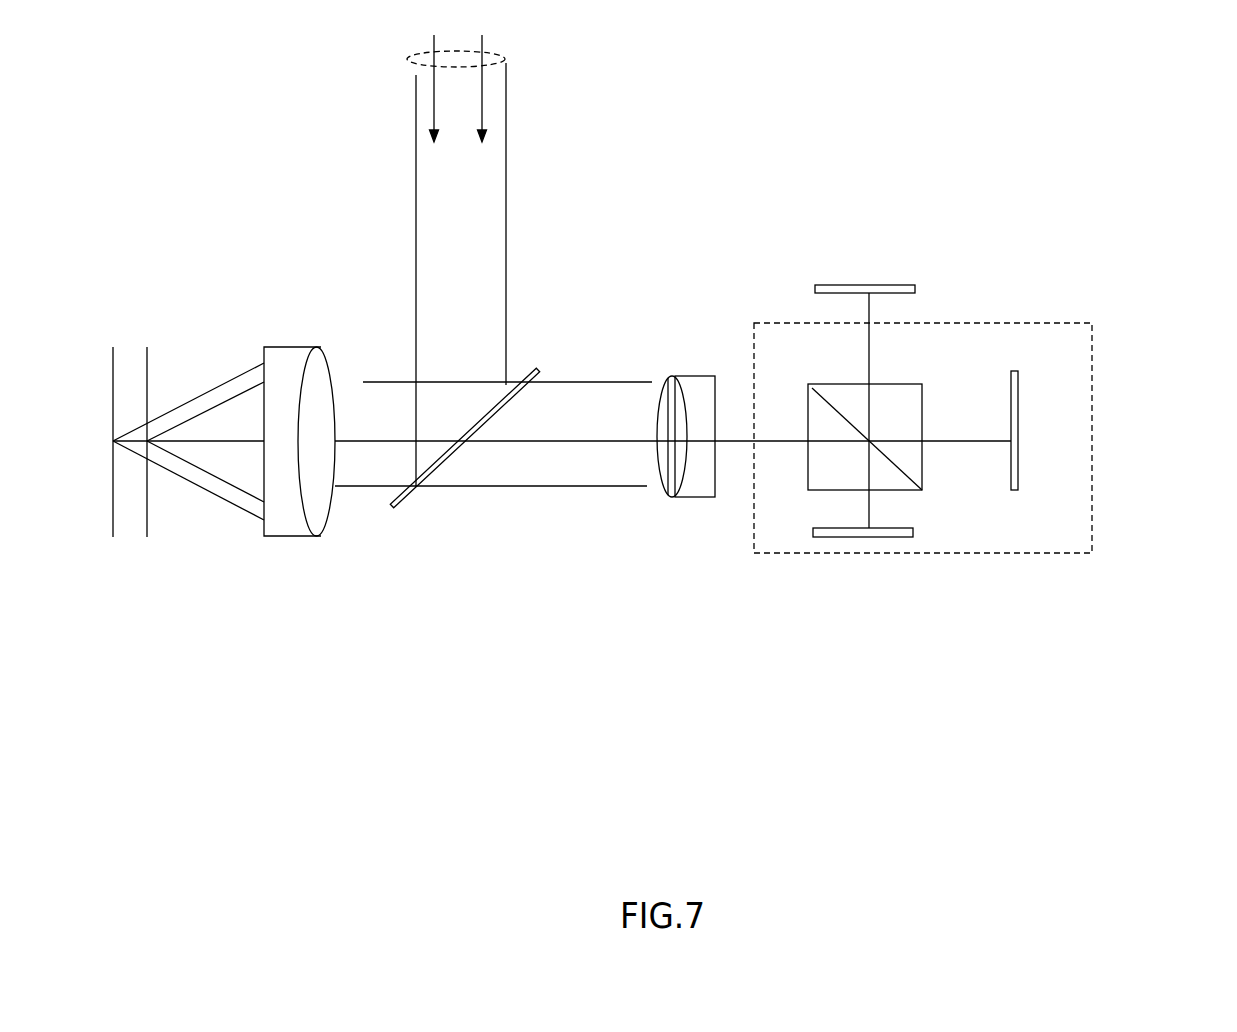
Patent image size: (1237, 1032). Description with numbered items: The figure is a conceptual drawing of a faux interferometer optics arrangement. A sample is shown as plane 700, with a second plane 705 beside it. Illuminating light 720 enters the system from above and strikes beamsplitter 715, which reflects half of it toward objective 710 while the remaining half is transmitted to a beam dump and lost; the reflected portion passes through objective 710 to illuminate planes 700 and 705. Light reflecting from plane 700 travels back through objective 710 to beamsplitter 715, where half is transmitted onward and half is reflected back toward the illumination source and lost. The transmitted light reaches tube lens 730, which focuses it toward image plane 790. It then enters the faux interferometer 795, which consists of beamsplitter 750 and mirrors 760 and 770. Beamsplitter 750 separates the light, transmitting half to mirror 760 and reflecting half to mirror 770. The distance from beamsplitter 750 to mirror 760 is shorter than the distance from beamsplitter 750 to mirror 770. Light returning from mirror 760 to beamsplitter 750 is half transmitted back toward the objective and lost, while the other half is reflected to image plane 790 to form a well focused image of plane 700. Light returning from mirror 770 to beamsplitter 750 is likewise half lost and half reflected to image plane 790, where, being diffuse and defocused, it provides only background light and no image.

The sample plane 700 is at (99, 520).
The second plane 705 is at (155, 542).
The objective 710 is at (278, 334).
The beamsplitter 715 is at (403, 515).
The illuminating light 720 is at (410, 57).
The tube lens 730 is at (662, 366).
The beamsplitter 750 is at (925, 377).
The mirror 760 is at (1039, 431).
The mirror 770 is at (939, 535).
The image plane 790 is at (936, 276).
The faux interferometer 795 is at (755, 303).